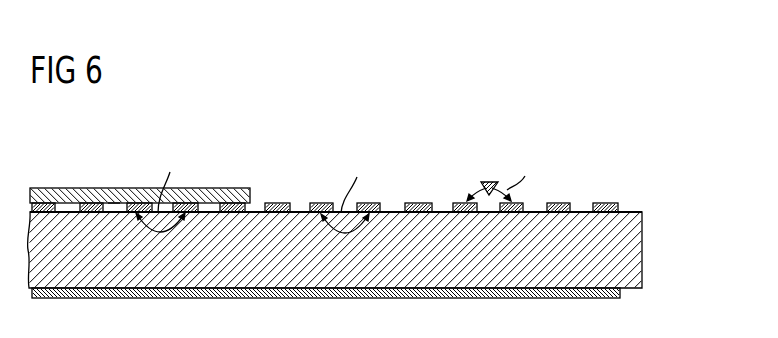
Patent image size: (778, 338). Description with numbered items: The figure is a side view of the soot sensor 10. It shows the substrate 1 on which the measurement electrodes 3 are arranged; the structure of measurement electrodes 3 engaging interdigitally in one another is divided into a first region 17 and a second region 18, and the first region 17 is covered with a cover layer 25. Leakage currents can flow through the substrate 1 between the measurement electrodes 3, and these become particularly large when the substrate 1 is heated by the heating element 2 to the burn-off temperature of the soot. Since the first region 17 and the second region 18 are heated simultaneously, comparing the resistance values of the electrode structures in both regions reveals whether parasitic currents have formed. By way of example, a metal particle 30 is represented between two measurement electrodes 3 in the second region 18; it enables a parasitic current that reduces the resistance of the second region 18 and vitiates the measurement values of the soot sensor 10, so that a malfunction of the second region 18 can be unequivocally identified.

The substrate 1 is at (627, 217).
The heating element 2 is at (420, 298).
The measurement electrodes 3 is at (152, 203).
The soot sensor 10 is at (590, 115).
The first region 17 is at (110, 198).
The second region 18 is at (440, 195).
The cover layer 25 is at (212, 198).
The metal particle 30 is at (490, 181).